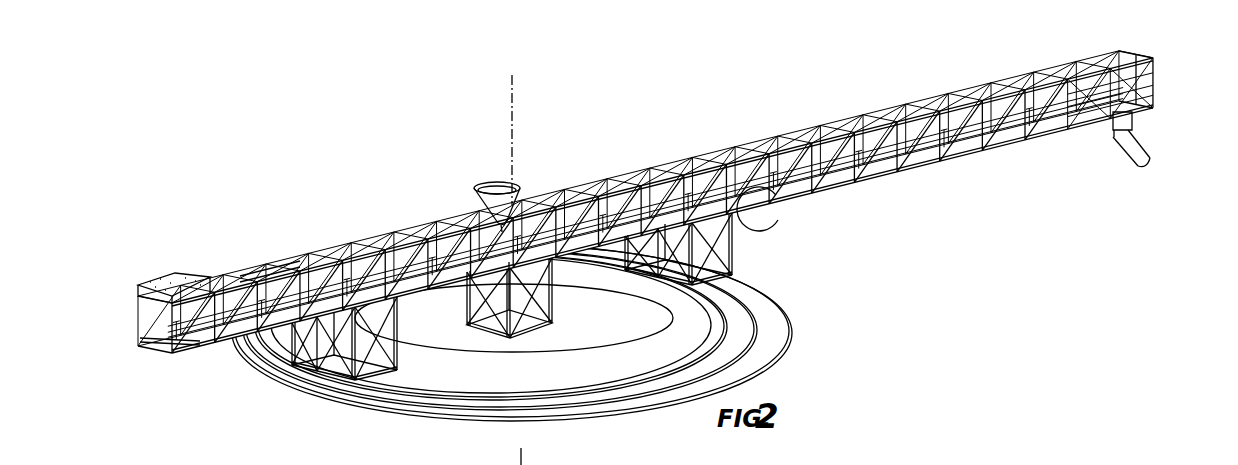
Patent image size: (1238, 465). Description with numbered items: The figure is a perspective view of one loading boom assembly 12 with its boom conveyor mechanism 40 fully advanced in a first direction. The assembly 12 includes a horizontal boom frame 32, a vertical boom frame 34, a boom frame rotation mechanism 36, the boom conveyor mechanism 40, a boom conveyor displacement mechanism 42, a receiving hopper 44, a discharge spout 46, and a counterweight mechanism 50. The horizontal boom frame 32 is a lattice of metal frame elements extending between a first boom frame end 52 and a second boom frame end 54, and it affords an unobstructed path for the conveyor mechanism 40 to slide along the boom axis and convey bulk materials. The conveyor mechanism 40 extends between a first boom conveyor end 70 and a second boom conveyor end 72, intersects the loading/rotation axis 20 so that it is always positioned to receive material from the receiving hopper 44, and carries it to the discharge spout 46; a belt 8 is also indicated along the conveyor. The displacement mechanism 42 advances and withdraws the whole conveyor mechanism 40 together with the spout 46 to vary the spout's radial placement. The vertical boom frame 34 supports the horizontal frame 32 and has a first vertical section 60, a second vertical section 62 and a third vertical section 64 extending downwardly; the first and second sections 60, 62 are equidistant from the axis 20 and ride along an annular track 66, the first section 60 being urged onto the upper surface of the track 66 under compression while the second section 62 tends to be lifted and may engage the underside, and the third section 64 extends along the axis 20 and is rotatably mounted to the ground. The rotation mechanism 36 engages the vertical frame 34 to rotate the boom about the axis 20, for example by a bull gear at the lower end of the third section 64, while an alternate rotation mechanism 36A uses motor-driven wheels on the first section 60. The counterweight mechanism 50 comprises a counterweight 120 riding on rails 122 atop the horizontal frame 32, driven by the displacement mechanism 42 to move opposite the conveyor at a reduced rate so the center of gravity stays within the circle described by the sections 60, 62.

The conveyor belt 8 is at (806, 194).
The loading boom assembly 12 is at (407, 103).
The loading/rotation axis 20 is at (516, 120).
The horizontal boom frame 32 is at (741, 126).
The vertical boom frame 34 is at (772, 250).
The boom frame rotation mechanism 36 is at (537, 331).
The boom frame rotation mechanism 36A is at (738, 284).
The boom conveyor mechanism 40 is at (955, 165).
The boom conveyor displacement mechanism 42 is at (773, 217).
The receiving hopper 44 is at (522, 184).
The discharge spout 46 is at (1152, 122).
The counterweight mechanism 50 is at (196, 241).
The first boom frame end 52 is at (1150, 53).
The second boom frame end 54 is at (197, 352).
The first vertical boom frame section 60 is at (690, 282).
The second vertical boom frame section 62 is at (398, 342).
The third vertical boom frame section 64 is at (553, 295).
The annular track 66 is at (790, 330).
The first boom conveyor end 70 is at (1115, 115).
The second boom conveyor end 72 is at (424, 222).
The counterweight 120 is at (166, 278).
The rails 122 is at (274, 259).